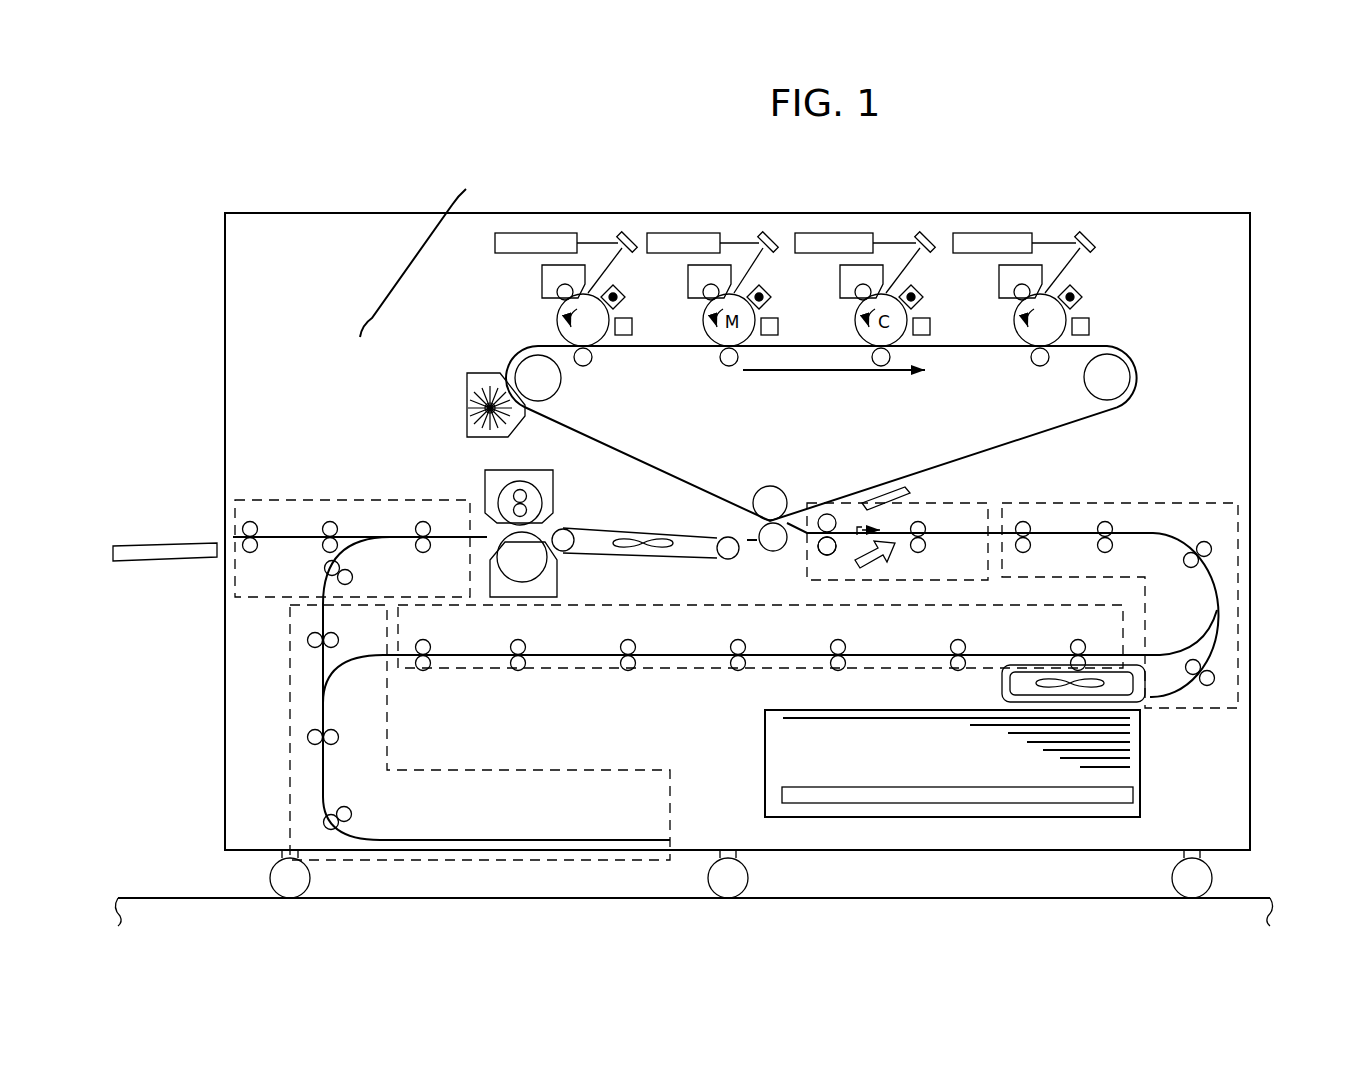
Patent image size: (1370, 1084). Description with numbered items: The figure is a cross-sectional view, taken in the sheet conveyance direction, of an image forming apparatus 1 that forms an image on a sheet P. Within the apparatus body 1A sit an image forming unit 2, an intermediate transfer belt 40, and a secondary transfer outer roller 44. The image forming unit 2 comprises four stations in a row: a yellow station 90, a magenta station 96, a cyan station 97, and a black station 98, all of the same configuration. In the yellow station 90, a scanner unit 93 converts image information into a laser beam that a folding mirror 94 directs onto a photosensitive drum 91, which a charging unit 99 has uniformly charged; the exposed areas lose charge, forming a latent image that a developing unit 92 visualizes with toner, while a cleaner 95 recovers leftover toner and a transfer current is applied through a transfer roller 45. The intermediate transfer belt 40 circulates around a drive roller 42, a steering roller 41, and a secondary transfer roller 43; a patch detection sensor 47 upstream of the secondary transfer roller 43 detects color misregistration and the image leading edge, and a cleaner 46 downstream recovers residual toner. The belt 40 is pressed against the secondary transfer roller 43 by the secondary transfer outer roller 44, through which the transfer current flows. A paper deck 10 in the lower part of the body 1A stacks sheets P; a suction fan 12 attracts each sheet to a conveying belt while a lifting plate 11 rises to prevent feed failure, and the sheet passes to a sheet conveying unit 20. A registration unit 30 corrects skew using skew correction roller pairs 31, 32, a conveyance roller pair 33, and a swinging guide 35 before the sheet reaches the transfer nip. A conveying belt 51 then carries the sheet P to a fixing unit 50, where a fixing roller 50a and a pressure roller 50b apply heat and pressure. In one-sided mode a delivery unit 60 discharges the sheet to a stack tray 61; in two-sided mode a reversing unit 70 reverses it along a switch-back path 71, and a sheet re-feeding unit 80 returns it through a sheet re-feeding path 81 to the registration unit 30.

The image forming apparatus 1 is at (1158, 172).
The apparatus body 1A is at (1254, 437).
The image forming unit 2 is at (1099, 296).
The paper deck 10 is at (762, 795).
The lifting plate 11 is at (807, 787).
The suction fan 12 is at (1080, 703).
The sheet conveying unit 20 is at (1254, 556).
The registration unit 30 is at (962, 500).
The skew correction roller pair 31 is at (827, 548).
The skew correction roller pair 32 is at (827, 546).
The conveyance roller pair 33 is at (927, 546).
The swinging guide 35 is at (889, 552).
The intermediate transfer belt 40 is at (1067, 420).
The steering roller 41 is at (1108, 377).
The drive roller 42 is at (545, 384).
The secondary transfer roller 43 is at (772, 487).
The secondary transfer outer roller 44 is at (772, 552).
The transfer roller 45 is at (585, 366).
The cleaner 46 is at (480, 382).
The patch detection sensor 47 is at (885, 478).
The fixing unit 50 is at (552, 531).
The fixing roller 50a is at (540, 470).
The pressure roller 50b is at (540, 560).
The conveying belt 51 is at (590, 546).
The delivery unit 60 is at (372, 498).
The stack tray 61 is at (172, 543).
The reversing unit 70 is at (620, 768).
The switch-back path 71 is at (325, 770).
The sheet re-feeding unit 80 is at (537, 670).
The sheet re-feeding path 81 is at (652, 655).
The yellow station 90 is at (410, 258).
The photosensitive drum 91 is at (556, 322).
The developing unit 92 is at (542, 272).
The scanner unit 93 is at (560, 233).
The folding mirror 94 is at (630, 230).
The cleaner 95 is at (633, 330).
The magenta station 96 is at (683, 233).
The cyan station 97 is at (837, 233).
The black station 98 is at (990, 233).
The charging unit 99 is at (623, 300).
The sheet P is at (947, 712).